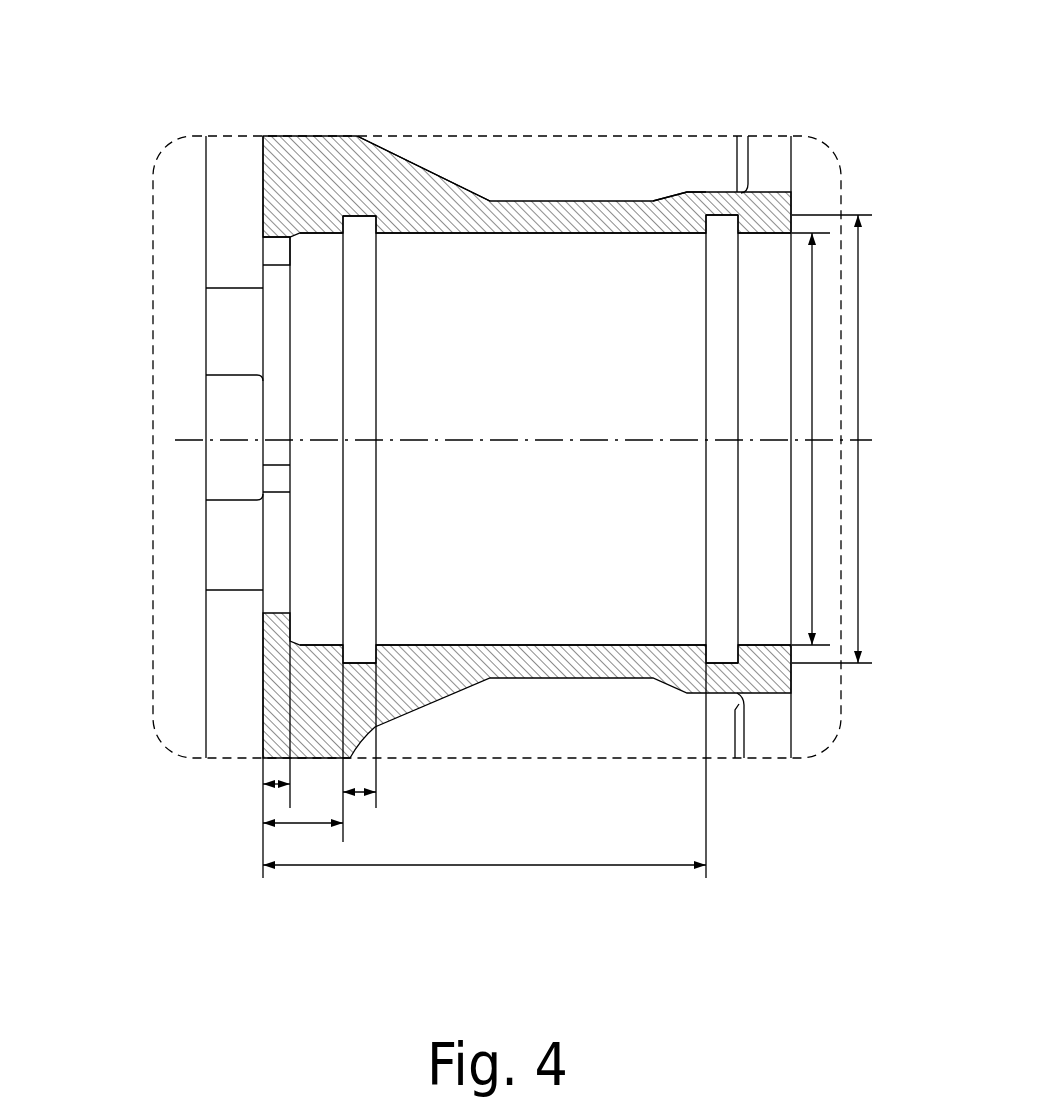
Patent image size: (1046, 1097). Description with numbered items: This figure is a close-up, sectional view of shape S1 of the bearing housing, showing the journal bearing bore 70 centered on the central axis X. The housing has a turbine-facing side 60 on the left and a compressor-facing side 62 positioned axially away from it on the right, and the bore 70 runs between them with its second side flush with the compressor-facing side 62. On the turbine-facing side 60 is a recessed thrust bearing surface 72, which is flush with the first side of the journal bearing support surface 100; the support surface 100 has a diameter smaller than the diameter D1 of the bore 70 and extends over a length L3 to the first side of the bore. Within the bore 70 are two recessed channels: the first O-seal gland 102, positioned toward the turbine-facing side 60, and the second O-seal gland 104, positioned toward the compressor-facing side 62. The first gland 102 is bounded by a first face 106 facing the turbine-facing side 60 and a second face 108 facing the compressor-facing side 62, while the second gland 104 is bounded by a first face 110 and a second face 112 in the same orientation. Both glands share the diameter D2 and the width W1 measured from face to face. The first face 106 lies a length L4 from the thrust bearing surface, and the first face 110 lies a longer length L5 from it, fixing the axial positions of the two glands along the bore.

The turbine-facing side 60 is at (206, 165).
The compressor-facing side 62 is at (792, 162).
The journal bearing bore 70 is at (770, 233).
The thrust bearing surface 72 is at (263, 248).
The journal bearing support surface 100 is at (288, 627).
The first O-seal gland 102 is at (350, 215).
The second O-seal gland 104 is at (714, 215).
The first face 106 is at (343, 213).
The second face 108 is at (380, 218).
The first face 110 is at (705, 217).
The second face 112 is at (750, 213).
The central axis X is at (190, 440).
The shape S1 is at (836, 157).
The diameter D1 is at (813, 312).
The diameter D2 is at (858, 440).
The length L3 is at (275, 787).
The length L4 is at (305, 826).
The width W1 is at (360, 795).
The length L5 is at (510, 868).